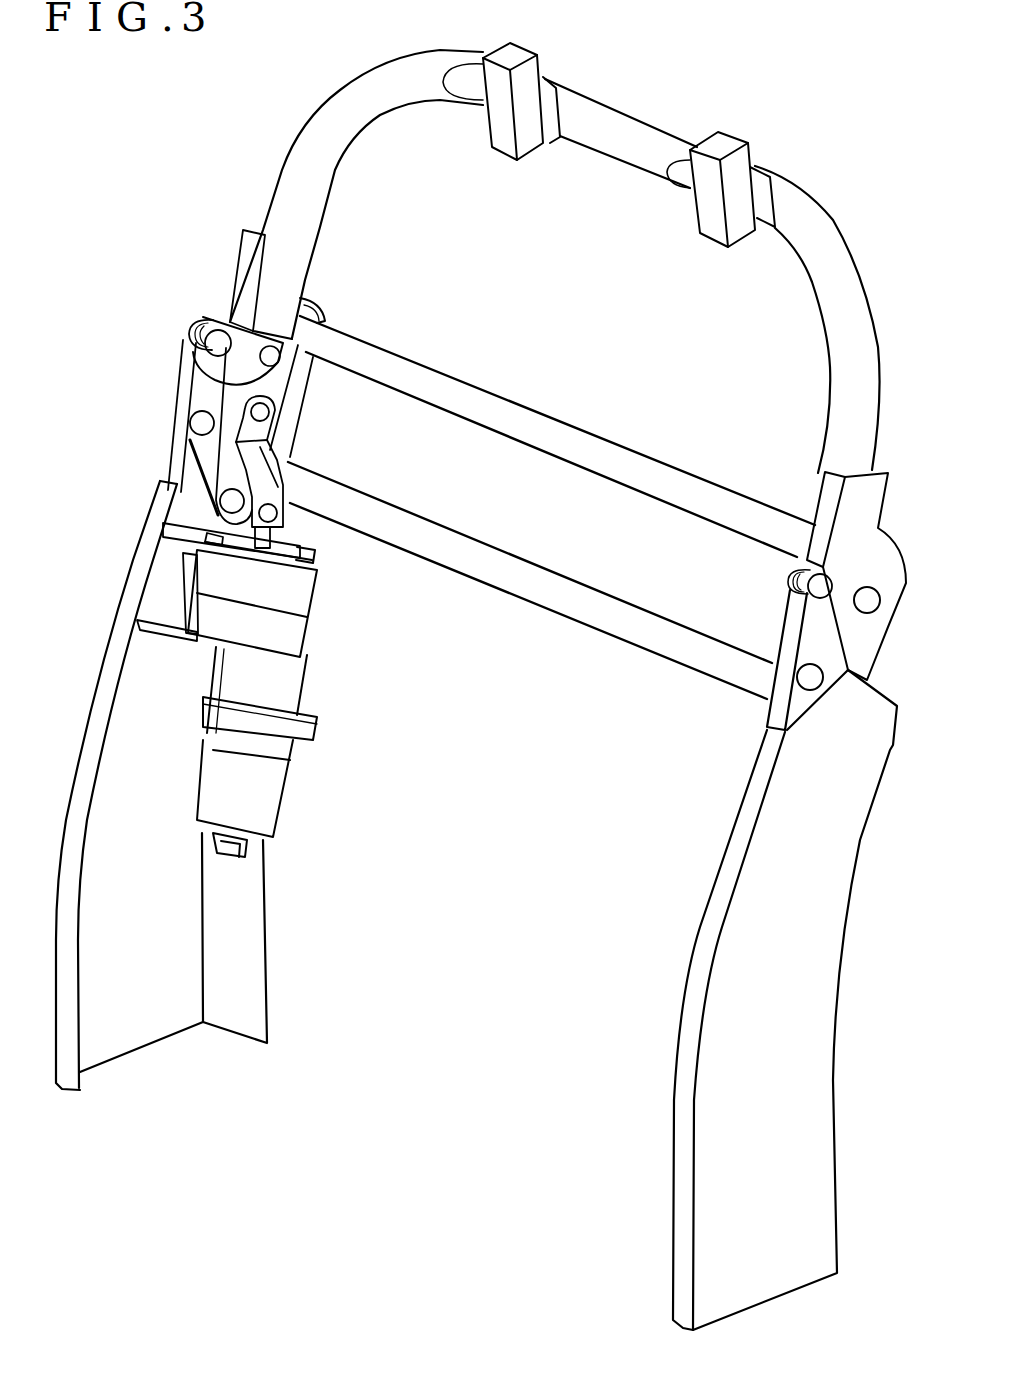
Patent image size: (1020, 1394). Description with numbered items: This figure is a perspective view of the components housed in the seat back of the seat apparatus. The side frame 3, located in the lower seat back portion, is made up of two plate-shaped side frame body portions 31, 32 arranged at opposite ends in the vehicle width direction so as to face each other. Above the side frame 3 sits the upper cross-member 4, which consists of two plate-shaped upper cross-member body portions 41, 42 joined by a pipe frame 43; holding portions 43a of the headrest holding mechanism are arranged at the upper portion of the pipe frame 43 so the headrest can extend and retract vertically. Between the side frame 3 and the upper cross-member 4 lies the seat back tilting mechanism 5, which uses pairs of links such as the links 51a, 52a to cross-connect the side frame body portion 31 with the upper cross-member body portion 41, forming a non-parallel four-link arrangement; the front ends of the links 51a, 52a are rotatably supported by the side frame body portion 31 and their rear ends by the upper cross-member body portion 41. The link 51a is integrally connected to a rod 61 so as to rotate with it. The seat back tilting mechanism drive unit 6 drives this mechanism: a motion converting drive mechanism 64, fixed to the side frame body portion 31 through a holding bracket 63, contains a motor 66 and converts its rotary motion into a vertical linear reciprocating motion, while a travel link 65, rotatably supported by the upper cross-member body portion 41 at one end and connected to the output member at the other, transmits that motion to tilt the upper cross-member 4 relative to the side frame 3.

The side frame 3 is at (68, 592).
The upper cross-member 4 is at (812, 137).
The seat back tilting mechanism 5 is at (100, 312).
The seat back tilting mechanism drive unit 6 is at (437, 650).
The side frame body portion 31 is at (140, 680).
The side frame body portion 32 is at (812, 970).
The upper cross-member body portion 41 is at (322, 306).
The upper cross-member body portion 42 is at (860, 550).
The pipe frame 43 is at (832, 257).
The holding portions 43a is at (530, 77).
The link 51a is at (237, 362).
The link 52a is at (202, 457).
The rod 61 is at (476, 396).
The holding bracket 63 is at (167, 522).
The motion converting drive mechanism 64 is at (287, 628).
The travel link 65 is at (283, 482).
The motor 66 is at (258, 783).